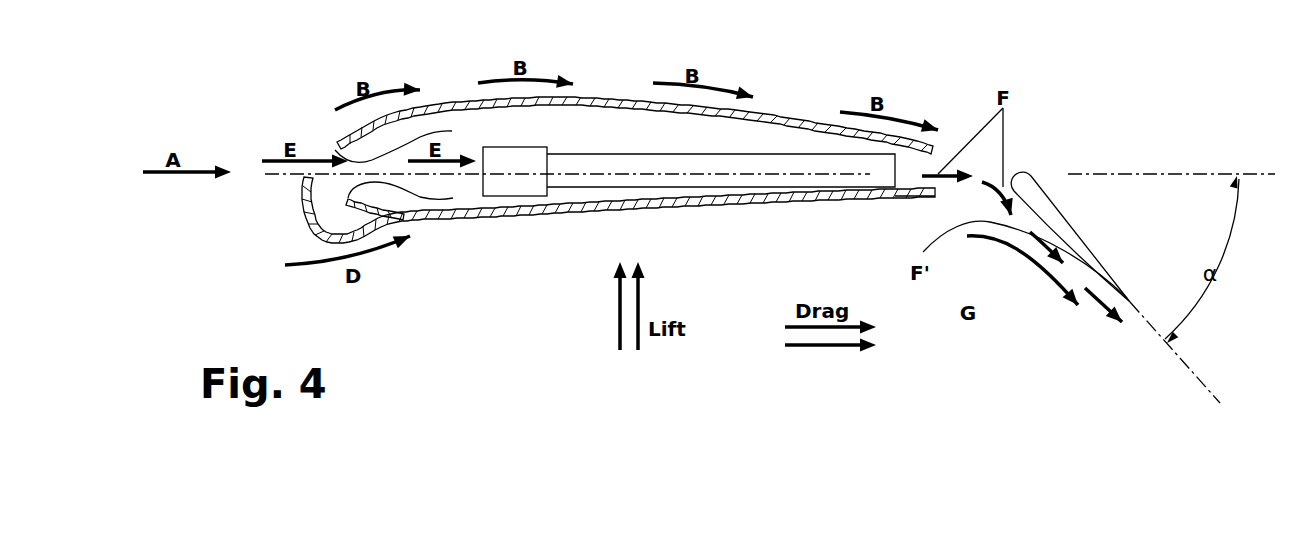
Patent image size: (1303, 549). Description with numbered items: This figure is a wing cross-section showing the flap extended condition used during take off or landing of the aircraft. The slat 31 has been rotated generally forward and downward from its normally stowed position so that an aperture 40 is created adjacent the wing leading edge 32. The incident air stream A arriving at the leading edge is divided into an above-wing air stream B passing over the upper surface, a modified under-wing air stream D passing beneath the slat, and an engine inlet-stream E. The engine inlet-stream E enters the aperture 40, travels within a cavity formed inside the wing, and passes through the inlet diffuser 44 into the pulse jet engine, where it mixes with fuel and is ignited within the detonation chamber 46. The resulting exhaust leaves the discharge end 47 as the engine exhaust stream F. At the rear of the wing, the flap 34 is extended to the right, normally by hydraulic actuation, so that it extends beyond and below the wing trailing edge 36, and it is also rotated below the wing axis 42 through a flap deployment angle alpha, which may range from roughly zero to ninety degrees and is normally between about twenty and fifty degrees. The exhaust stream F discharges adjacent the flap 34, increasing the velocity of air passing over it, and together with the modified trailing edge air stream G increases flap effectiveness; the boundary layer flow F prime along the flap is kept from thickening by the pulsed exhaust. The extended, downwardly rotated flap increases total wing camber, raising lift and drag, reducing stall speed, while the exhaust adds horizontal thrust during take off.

The slat 31 is at (303, 225).
The wing leading edge 32 is at (333, 143).
The flap 34 is at (1093, 258).
The wing trailing edge 36 is at (938, 148).
The aperture 40 is at (330, 148).
The wing axis 42 is at (1171, 139).
The inlet diffuser 44 is at (428, 198).
The detonation chamber 46 is at (543, 147).
The discharge end 47 is at (912, 192).